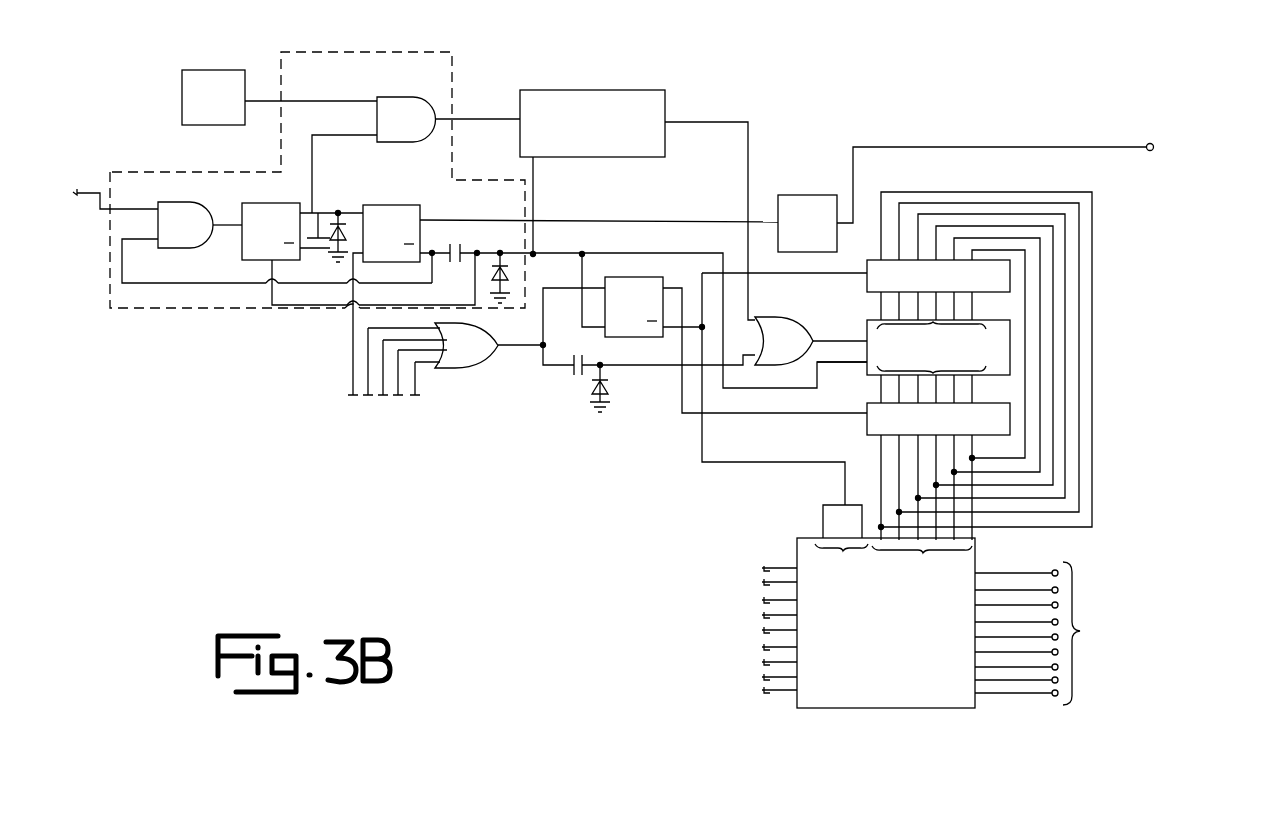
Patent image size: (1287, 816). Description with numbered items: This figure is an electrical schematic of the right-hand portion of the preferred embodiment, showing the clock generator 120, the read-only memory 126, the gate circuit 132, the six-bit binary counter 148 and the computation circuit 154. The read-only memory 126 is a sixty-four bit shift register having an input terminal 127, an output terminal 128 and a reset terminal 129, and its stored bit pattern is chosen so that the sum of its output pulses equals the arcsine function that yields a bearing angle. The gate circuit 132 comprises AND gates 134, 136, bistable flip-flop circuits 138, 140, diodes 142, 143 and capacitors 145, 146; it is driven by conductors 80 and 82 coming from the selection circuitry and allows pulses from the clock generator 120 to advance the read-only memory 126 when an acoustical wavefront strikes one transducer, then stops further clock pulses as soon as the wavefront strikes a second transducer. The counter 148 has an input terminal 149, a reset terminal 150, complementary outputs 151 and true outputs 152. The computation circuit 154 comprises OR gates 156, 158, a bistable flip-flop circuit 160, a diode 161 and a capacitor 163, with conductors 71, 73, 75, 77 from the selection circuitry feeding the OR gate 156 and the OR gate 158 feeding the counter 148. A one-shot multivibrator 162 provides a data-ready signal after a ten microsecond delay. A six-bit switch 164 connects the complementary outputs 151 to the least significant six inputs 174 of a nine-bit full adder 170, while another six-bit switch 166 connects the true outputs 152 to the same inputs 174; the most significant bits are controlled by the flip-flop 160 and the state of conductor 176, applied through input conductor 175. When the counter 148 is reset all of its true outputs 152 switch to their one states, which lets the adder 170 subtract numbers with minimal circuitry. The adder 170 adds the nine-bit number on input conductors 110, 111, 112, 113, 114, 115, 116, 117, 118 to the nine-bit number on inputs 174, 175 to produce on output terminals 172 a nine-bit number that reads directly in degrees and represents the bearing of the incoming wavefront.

The conductor 80 is at (77, 195).
The gate circuit 132 is at (230, 312).
The clock generator 120 is at (215, 70).
The AND gate 136 is at (400, 97).
The input terminal 127 is at (518, 118).
The read-only memory 126 is at (588, 90).
The output terminal 128 is at (670, 120).
The reset terminal 129 is at (532, 157).
The one-shot multivibrator 162 is at (816, 180).
The AND gate 134 is at (206, 203).
The bistable flip-flop circuit 138 is at (276, 203).
The capacitor 145 is at (306, 234).
The diode 142 is at (334, 245).
The bistable flip-flop circuit 140 is at (418, 192).
The capacitor 146 is at (448, 250).
The diode 143 is at (510, 268).
The conductor 82 is at (352, 366).
The OR gate 156 is at (478, 368).
The conductor 73 is at (362, 378).
The conductor 75 is at (386, 386).
The conductor 71 is at (400, 386).
The conductor 77 is at (418, 378).
The capacitor 163 is at (562, 378).
The diode 161 is at (608, 393).
The bistable flip-flop circuit 160 is at (663, 268).
The OR gate 158 is at (770, 318).
The input terminal 149 is at (870, 338).
The reset terminal 150 is at (866, 370).
The 6-bit binary counter 148 is at (1006, 378).
The complementary outputs 151 is at (931, 334).
The true outputs 152 is at (931, 363).
The 6-bit switch 164 is at (867, 271).
The 6-bit switch 166 is at (867, 417).
The computation circuit 154 is at (1133, 336).
The conductor 176 is at (790, 462).
The input conductor 175 is at (841, 539).
The inputs 174 is at (922, 563).
The 9-bit full adder 170 is at (934, 708).
The input conductor 110 is at (770, 566).
The input conductor 111 is at (762, 580).
The input conductor 112 is at (762, 598).
The input conductor 113 is at (762, 614).
The input conductor 114 is at (762, 630).
The input conductor 115 is at (762, 646).
The input conductor 116 is at (762, 662).
The input conductor 117 is at (762, 678).
The input conductor 118 is at (776, 692).
The output terminals 172 is at (1083, 633).